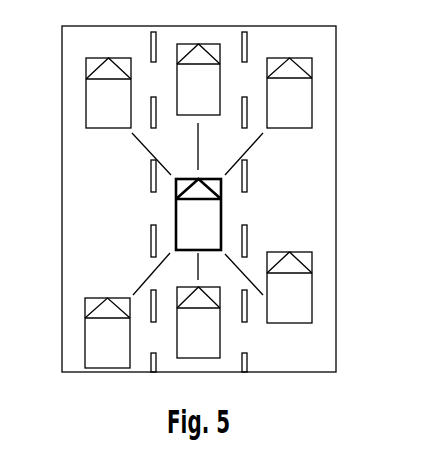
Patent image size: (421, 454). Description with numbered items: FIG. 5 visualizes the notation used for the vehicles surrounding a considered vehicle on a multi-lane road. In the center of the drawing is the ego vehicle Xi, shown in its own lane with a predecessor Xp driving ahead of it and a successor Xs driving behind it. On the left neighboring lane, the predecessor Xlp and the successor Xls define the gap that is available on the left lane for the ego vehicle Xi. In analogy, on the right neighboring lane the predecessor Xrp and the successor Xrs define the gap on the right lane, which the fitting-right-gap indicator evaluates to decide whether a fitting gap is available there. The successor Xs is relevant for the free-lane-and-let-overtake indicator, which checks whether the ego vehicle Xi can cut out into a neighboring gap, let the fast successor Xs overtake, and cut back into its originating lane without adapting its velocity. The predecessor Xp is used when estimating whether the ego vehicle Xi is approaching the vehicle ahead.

The predecessor on left neighboring lane Xlp is at (108, 93).
The predecessor Xp is at (198, 79).
The predecessor on right neighboring lane Xrp is at (289, 93).
The ego vehicle Xi is at (198, 214).
The successor on left neighboring lane Xls is at (107, 333).
The successor Xs is at (198, 322).
The successor on right neighboring lane Xrs is at (289, 287).